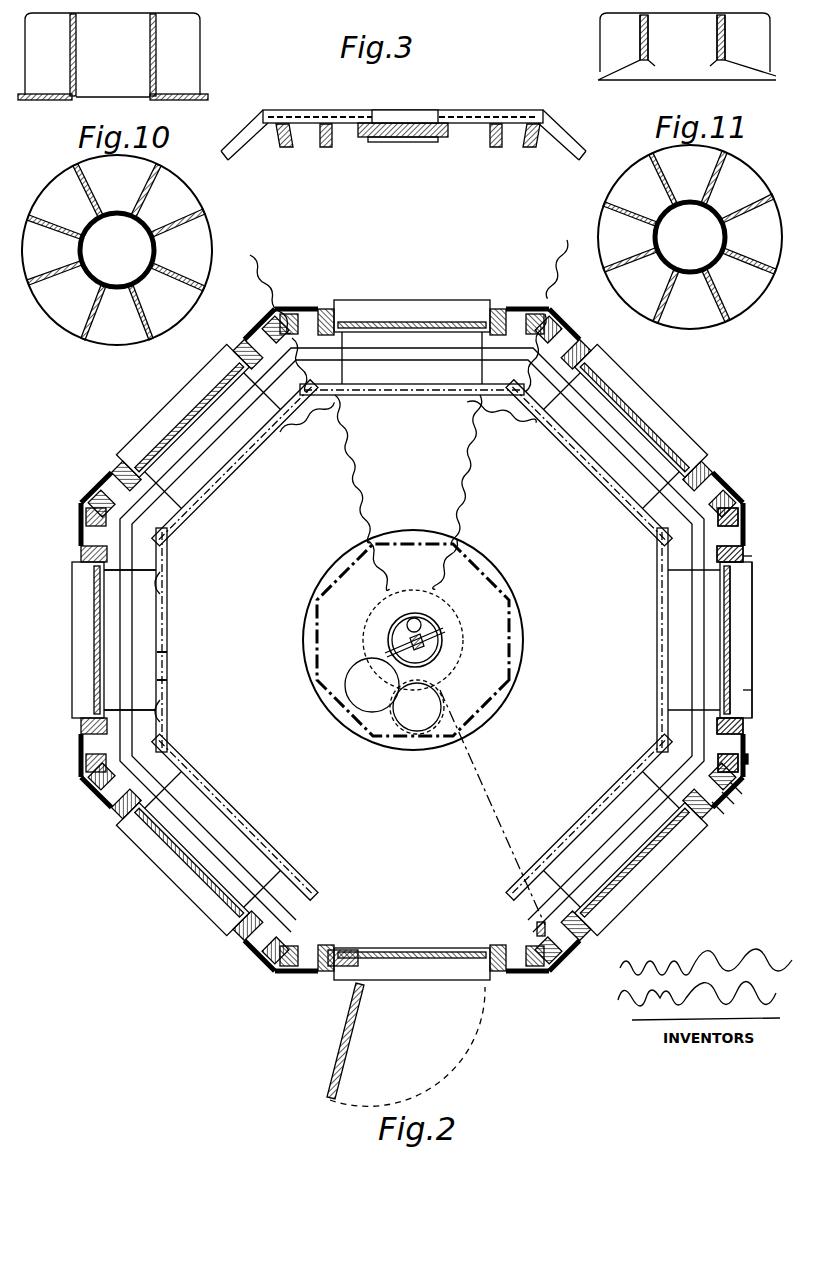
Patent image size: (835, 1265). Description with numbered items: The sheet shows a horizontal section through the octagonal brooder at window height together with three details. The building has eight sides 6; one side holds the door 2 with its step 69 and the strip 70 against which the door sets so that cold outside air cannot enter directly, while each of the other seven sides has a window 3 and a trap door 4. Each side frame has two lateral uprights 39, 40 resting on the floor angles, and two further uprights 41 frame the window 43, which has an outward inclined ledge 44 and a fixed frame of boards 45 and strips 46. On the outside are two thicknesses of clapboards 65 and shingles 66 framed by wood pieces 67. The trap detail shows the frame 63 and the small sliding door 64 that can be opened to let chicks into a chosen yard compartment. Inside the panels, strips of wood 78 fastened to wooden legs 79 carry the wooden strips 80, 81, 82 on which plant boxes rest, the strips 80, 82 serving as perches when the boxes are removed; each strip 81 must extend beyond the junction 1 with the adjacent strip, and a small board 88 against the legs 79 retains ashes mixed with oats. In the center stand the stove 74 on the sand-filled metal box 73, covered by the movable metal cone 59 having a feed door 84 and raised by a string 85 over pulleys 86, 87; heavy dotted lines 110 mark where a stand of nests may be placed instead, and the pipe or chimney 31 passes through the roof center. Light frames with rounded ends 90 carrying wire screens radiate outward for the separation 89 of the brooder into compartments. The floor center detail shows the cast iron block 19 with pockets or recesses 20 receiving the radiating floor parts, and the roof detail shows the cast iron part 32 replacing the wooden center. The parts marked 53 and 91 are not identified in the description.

In FIG. 2, the junction 1 is at (656, 524).
In FIG. 2, the door 2 is at (348, 1030).
In FIG. 2, the window 3 is at (412, 328).
In FIG. 3, the trap door 4 is at (393, 129).
In FIG. 2, the sides 6 is at (256, 328).
In FIG. 10, the block 19 is at (115, 176).
In FIG. 10, the pockets or recesses 20 is at (115, 196).
In FIG. 2, the pipe or chimney 31 is at (420, 628).
In FIG. 11, the cast iron part 32 is at (690, 171).
In FIG. 2, the lateral upright 39 is at (748, 500).
In FIG. 2, the lateral upright 40 is at (750, 762).
In FIG. 2, the upright 41 is at (748, 541).
In FIG. 2, the window 43 is at (732, 580).
In FIG. 2, the ledge 44 is at (756, 656).
In FIG. 2, the boards 45 is at (754, 688).
In FIG. 2, the strips 46 is at (752, 556).
In FIG. 2, the panel 53 is at (641, 869).
In FIG. 2, the movable metal cone 59 is at (413, 640).
In FIG. 3, the frame 63 is at (372, 135).
In FIG. 3, the small sliding door 64 is at (411, 138).
In FIG. 2, the clapboards 65 is at (740, 792).
In FIG. 2, the shingles 66 is at (736, 806).
In FIG. 2, the wood pieces 67 is at (722, 812).
In FIG. 2, the step 69 is at (412, 977).
In FIG. 2, the strip 70 is at (366, 962).
In FIG. 2, the metal box 73 is at (464, 630).
In FIG. 2, the stove 74 is at (432, 646).
In FIG. 2, the strips of wood 78 is at (166, 584).
In FIG. 2, the wooden legs 79 is at (168, 572).
In FIG. 2, the wooden strip 80 is at (168, 652).
In FIG. 2, the wooden strip 81 is at (168, 680).
In FIG. 2, the wooden strip 82 is at (126, 678).
In FIG. 2, the door 84 is at (417, 707).
In FIG. 2, the string 85 is at (492, 807).
In FIG. 2, the pulley 86 is at (440, 655).
In FIG. 2, the pulley 87 is at (536, 930).
In FIG. 2, the small board 88 is at (196, 776).
In FIG. 2, the brooder separation 89 is at (352, 498).
In FIG. 2, the light frames with rounded ends 90 is at (478, 408).
In FIG. 2, the cable 91 is at (256, 268).
In FIG. 2, the heavy dotted lines 110 is at (484, 570).